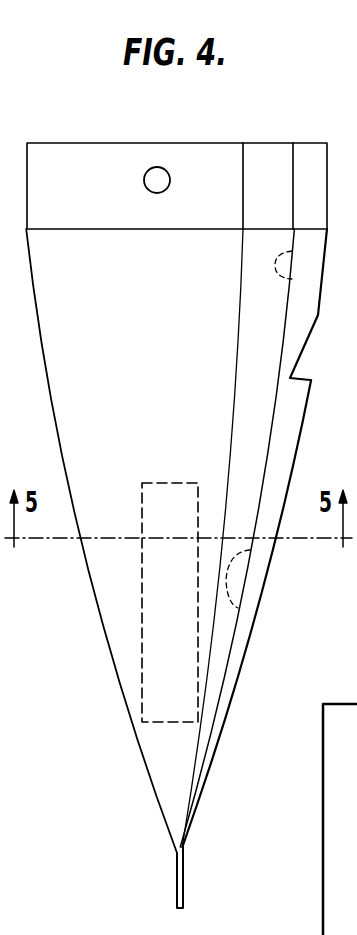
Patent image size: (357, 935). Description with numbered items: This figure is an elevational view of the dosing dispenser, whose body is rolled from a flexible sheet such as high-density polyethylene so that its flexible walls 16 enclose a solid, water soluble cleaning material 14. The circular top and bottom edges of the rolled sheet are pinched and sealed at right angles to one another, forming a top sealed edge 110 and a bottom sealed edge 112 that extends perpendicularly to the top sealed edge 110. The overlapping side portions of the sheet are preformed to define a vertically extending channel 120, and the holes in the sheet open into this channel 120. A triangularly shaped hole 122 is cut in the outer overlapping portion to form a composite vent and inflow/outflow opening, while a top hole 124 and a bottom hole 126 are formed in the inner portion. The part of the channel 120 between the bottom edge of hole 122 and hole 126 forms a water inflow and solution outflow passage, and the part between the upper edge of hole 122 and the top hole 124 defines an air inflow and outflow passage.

The top sealed edge 110 is at (211, 226).
The bottom sealed edge 112 is at (184, 853).
The vertically extending channel 120 is at (299, 421).
The triangularly shaped hole 122 is at (306, 344).
The top hole 124 is at (295, 265).
The bottom hole 126 is at (230, 585).
The solid, water soluble cleaning material 14 is at (162, 676).
The flexible walls 16 is at (128, 617).